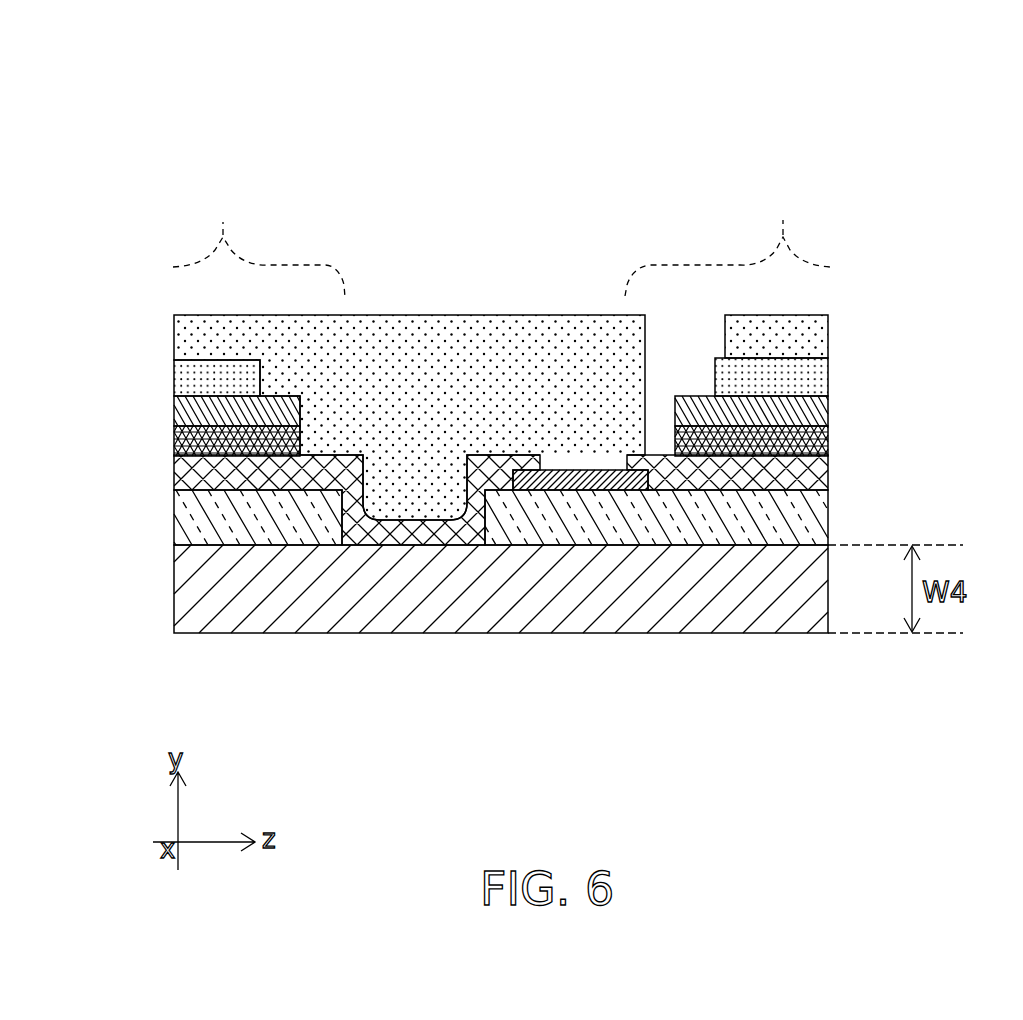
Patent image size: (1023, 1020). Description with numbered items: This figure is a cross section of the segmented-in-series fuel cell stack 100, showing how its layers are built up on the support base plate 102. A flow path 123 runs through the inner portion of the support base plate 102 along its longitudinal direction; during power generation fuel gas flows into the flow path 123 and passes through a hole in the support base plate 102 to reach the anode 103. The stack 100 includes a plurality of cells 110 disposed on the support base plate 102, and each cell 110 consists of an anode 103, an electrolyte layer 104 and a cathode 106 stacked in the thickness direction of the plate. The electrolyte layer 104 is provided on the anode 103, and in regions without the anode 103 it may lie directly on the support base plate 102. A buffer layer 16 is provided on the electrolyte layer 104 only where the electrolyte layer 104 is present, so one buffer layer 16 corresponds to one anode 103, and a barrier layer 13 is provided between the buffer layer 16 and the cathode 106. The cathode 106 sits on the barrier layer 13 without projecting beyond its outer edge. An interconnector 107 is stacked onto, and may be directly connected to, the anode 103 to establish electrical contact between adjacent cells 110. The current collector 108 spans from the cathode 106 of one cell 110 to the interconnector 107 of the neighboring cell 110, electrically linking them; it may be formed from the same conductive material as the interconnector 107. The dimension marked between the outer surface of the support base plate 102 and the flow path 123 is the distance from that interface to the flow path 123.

The fuel cell stack 100 is at (350, 133).
The support base plate 102 is at (668, 622).
The anode 103 is at (205, 518).
The electrolyte layer 104 is at (210, 476).
The cathode 106 is at (205, 381).
The interconnector 107 is at (513, 473).
The current collector 108 is at (413, 330).
The cell 110 is at (501, 237).
The flow path 123 is at (350, 691).
The barrier layer 13 is at (202, 410).
The buffer layer 16 is at (180, 440).